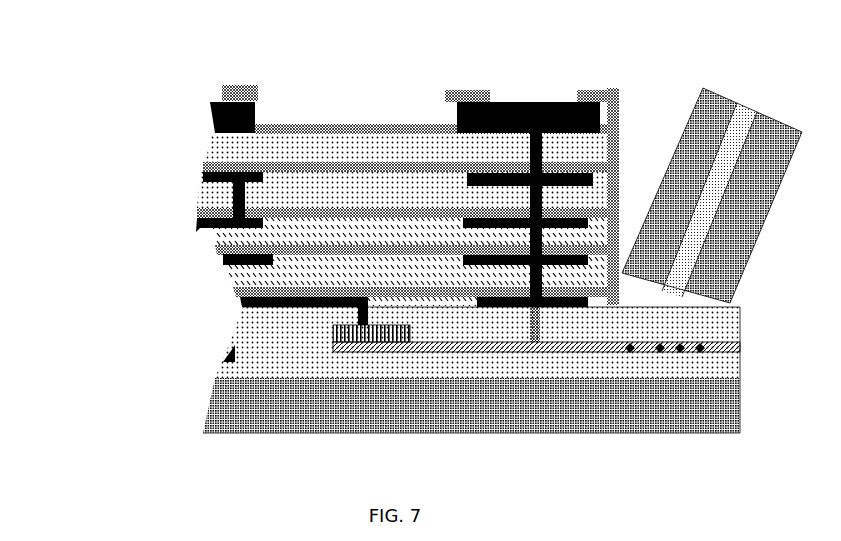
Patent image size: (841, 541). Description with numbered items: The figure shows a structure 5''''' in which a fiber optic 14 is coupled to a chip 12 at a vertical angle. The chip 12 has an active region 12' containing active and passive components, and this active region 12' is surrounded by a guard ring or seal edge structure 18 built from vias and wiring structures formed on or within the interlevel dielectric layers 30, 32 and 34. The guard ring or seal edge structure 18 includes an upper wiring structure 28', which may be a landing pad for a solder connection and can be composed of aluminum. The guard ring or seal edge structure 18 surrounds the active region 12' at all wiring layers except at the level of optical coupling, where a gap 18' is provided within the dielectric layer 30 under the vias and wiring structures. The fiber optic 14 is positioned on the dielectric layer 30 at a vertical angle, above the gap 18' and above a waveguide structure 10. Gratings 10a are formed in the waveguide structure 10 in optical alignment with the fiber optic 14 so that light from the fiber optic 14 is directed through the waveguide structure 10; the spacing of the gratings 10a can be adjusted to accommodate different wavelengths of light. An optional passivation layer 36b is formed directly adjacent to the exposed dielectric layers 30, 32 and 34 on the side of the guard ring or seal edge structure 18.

The chip 12 is at (424, 272).
The active region 12' is at (392, 256).
The interlevel dielectric layer 34 is at (340, 130).
The guard ring or seal edge structure 18 is at (402, 209).
The interlevel dielectric layer 32 is at (395, 303).
The upper wiring structure 28' is at (526, 179).
The passivation layer 36b is at (620, 150).
The interlevel dielectric layer 30 is at (745, 323).
The waveguide structure 10 is at (502, 353).
The gap 18' is at (576, 404).
The gratings 10a is at (700, 348).
The structure 5''''' is at (718, 161).
The fiber optic 14 is at (785, 173).